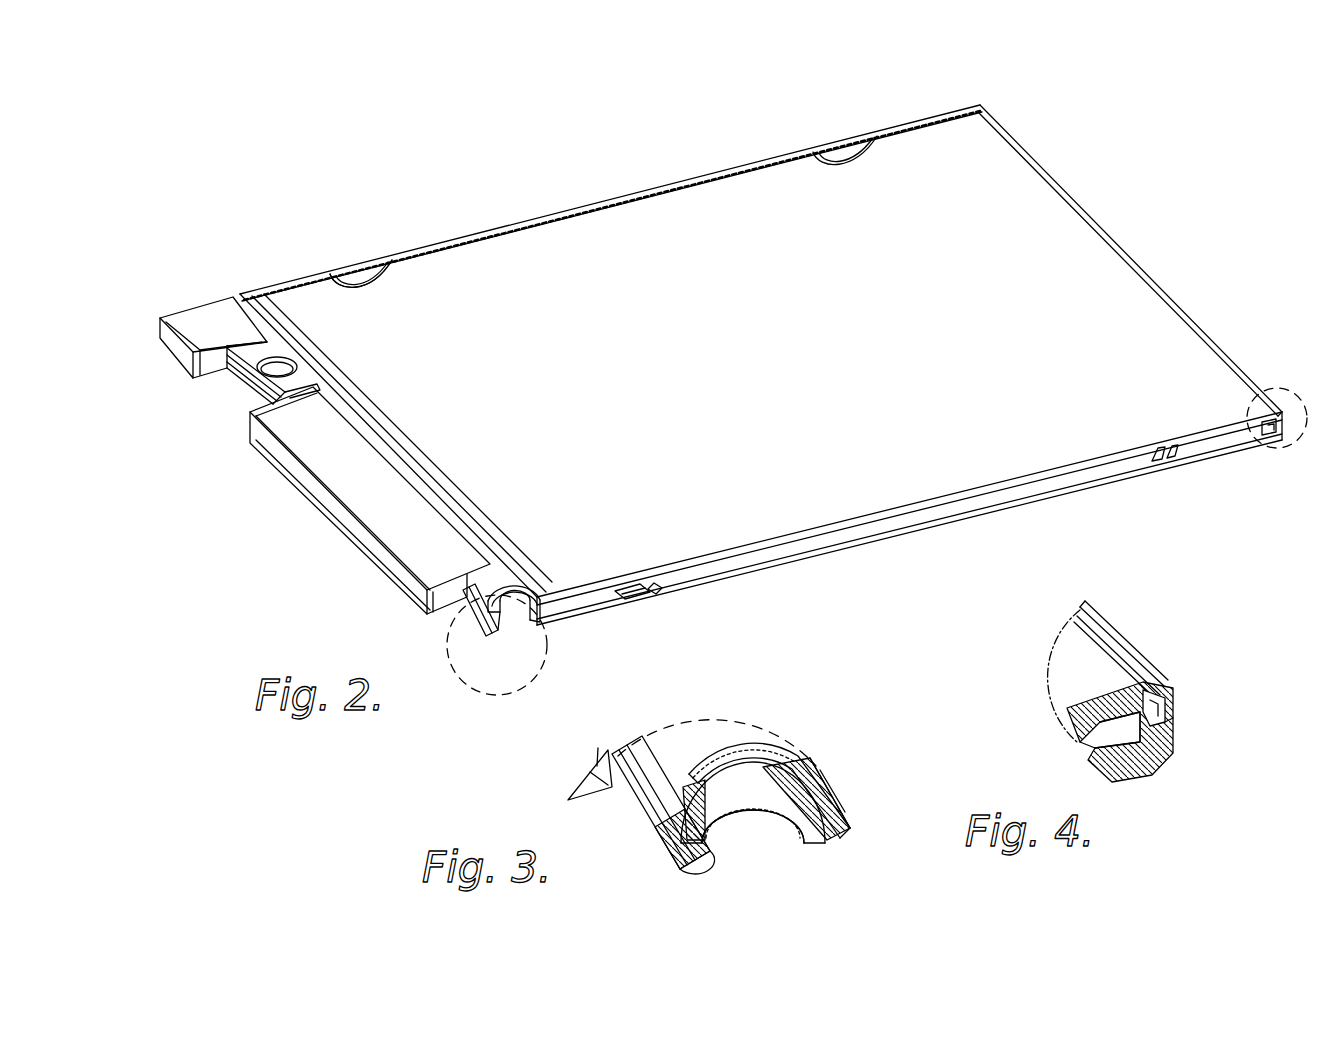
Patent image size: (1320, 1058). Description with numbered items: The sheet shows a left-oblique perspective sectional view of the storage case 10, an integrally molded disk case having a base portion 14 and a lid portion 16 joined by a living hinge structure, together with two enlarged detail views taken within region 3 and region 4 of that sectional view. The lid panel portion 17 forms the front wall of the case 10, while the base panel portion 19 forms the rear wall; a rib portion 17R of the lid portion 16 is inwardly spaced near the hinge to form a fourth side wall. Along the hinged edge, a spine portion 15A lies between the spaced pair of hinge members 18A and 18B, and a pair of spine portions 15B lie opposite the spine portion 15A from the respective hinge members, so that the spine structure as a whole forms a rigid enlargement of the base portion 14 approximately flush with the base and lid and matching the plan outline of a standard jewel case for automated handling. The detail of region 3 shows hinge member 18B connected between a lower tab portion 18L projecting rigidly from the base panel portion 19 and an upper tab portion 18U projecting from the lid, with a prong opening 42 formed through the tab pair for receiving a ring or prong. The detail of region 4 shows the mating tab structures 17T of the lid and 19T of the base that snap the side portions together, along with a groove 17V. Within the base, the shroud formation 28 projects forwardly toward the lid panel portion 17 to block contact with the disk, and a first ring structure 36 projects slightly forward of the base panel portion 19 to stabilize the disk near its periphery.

In FIG. 2, the storage case 10 is at (376, 596).
In FIG. 4, the base portion 14 is at (1173, 756).
In FIG. 2, the spine portion 15A is at (387, 492).
In FIG. 2, the spine portions 15B is at (237, 337).
In FIG. 2, the lid portion 16 is at (438, 246).
In FIG. 2, the lid panel portion 17 is at (736, 397).
In FIG. 4, the lid panel portion 17 is at (1094, 683).
In FIG. 3, the rib portion 17R is at (830, 797).
In FIG. 4, the tab structures of the lid portion 17T is at (1175, 723).
In FIG. 4, the plate groove 17V is at (1086, 744).
In FIG. 2, the hinge member 18A is at (258, 390).
In FIG. 2, the hinge member 18B is at (470, 612).
In FIG. 3, the hinge member 18B is at (655, 826).
In FIG. 3, the lower tab portions 18L is at (757, 805).
In FIG. 3, the upper tab portions 18U is at (708, 751).
In FIG. 4, the base panel portion 19 is at (1121, 756).
In FIG. 4, the tab structures of the base portion 19T is at (1168, 685).
In FIG. 2, the shroud formation 28 is at (640, 586).
In FIG. 2, the first ring structure 36 is at (650, 588).
In FIG. 3, the prong opening 42 is at (768, 763).
In FIG. 2, the region 3 is at (546, 688).
In FIG. 2, the region 4 is at (1290, 446).